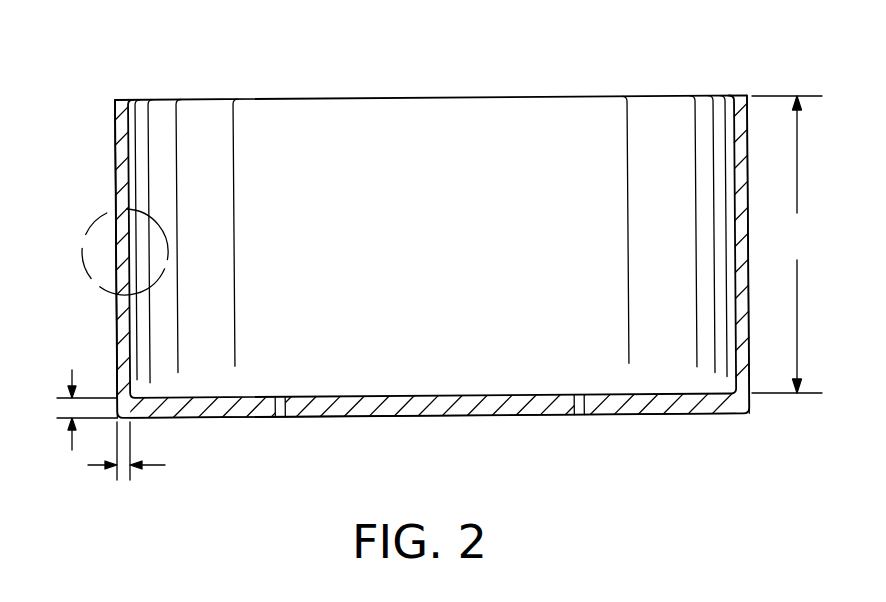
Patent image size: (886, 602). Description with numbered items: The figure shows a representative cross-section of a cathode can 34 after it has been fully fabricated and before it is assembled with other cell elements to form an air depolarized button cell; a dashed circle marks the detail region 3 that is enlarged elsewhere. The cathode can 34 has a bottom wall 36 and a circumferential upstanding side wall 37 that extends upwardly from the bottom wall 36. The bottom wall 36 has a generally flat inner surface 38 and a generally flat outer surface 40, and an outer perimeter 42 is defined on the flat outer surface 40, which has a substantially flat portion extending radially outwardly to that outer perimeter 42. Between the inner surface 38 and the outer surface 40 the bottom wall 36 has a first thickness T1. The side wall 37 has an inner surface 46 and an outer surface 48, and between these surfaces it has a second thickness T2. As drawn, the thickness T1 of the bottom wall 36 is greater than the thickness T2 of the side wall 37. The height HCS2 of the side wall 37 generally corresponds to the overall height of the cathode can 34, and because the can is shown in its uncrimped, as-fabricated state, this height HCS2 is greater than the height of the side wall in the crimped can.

The detail region (FIG. 3) 3 is at (82, 248).
The cathode can 34 is at (543, 95).
The bottom wall 36 is at (340, 432).
The circumferential upstanding side wall 37 is at (100, 161).
The inner surface 38 is at (412, 397).
The outer surface 40 is at (297, 420).
The outer perimeter 42 is at (735, 419).
The inner surface 46 is at (130, 120).
The outer surface 48 is at (115, 132).
The first thickness T1 is at (87, 394).
The second thickness T2 is at (144, 452).
The height of side wall HCS2 is at (802, 244).